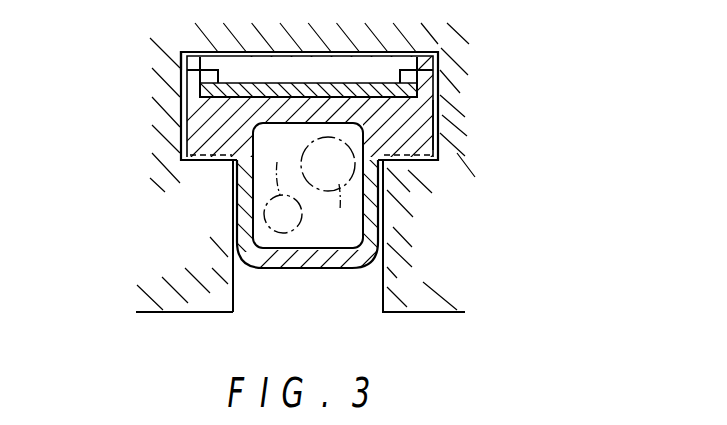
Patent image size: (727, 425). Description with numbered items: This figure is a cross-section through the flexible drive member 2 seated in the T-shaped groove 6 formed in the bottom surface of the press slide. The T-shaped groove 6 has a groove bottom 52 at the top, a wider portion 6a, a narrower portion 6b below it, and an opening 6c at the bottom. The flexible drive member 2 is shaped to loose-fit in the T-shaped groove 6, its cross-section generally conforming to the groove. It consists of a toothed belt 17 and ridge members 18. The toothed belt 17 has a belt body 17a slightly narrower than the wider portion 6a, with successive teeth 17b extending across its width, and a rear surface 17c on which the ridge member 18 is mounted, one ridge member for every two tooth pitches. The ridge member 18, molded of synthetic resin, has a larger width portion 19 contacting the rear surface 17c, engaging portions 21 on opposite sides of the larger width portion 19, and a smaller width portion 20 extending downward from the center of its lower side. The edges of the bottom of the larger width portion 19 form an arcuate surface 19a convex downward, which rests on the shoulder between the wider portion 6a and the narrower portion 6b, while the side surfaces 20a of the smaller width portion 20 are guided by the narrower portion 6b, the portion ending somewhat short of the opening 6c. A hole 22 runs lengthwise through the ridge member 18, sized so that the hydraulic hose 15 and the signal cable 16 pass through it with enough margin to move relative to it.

The flexible drive member 2 is at (300, 268).
The T-shaped groove 6 is at (76, 96).
The wider portion 6a is at (181, 107).
The narrower portion 6b is at (230, 278).
The opening 6c is at (160, 296).
The hydraulic hose 15 is at (308, 185).
The signal cable 16 is at (299, 182).
The toothed belt 17 is at (370, 75).
The belt body 17a is at (400, 86).
The teeth 17b is at (333, 72).
The rear surface 17c is at (438, 111).
The ridge member 18 is at (333, 268).
The larger width portion 19 is at (450, 153).
The arcuate surface 19a is at (230, 168).
The smaller width portion 20 is at (352, 262).
The side surfaces 20a is at (228, 222).
The engaging portions 21 is at (193, 80).
The hole 22 is at (273, 255).
The groove bottom 52 is at (181, 51).